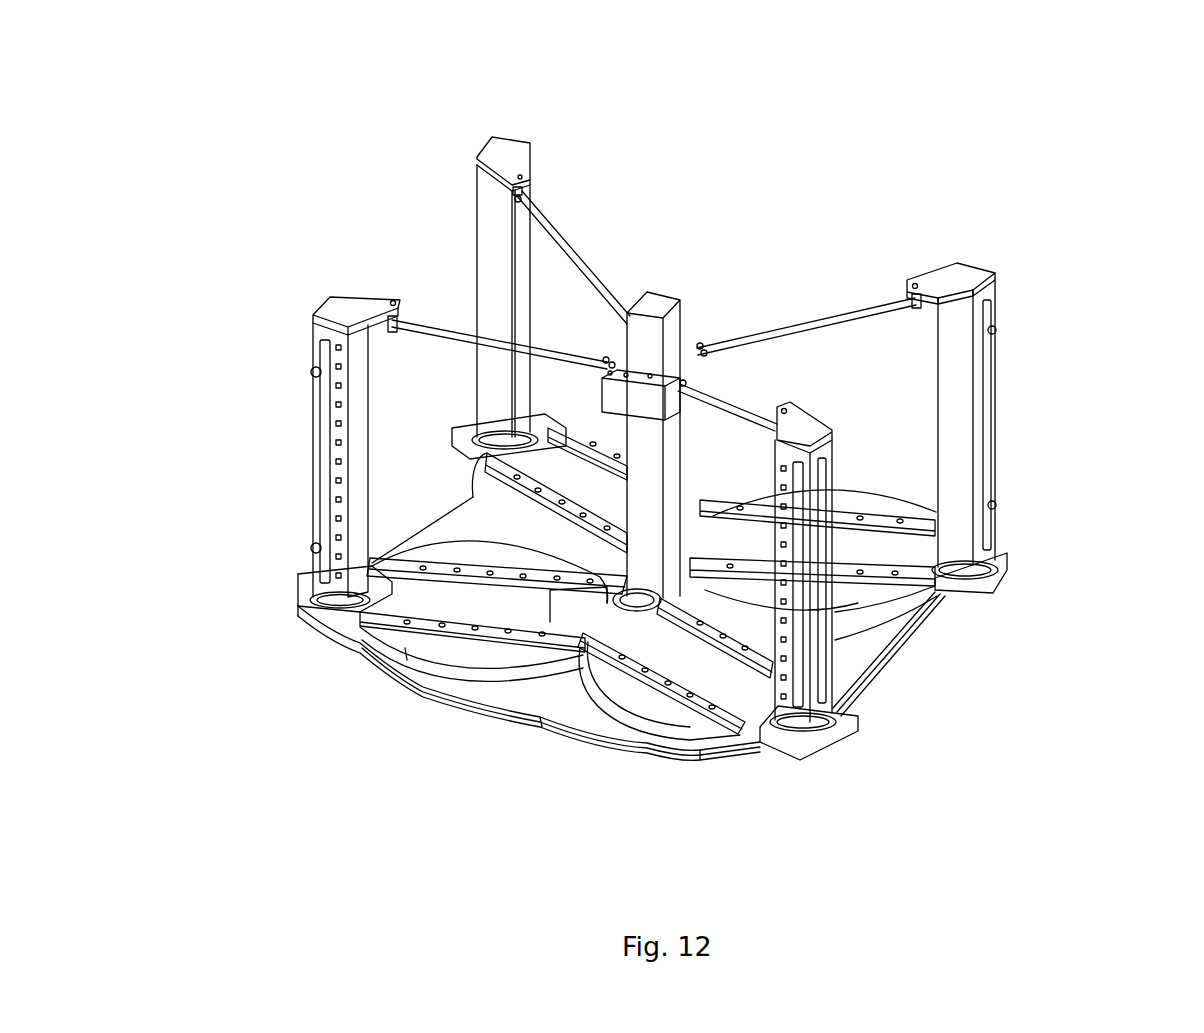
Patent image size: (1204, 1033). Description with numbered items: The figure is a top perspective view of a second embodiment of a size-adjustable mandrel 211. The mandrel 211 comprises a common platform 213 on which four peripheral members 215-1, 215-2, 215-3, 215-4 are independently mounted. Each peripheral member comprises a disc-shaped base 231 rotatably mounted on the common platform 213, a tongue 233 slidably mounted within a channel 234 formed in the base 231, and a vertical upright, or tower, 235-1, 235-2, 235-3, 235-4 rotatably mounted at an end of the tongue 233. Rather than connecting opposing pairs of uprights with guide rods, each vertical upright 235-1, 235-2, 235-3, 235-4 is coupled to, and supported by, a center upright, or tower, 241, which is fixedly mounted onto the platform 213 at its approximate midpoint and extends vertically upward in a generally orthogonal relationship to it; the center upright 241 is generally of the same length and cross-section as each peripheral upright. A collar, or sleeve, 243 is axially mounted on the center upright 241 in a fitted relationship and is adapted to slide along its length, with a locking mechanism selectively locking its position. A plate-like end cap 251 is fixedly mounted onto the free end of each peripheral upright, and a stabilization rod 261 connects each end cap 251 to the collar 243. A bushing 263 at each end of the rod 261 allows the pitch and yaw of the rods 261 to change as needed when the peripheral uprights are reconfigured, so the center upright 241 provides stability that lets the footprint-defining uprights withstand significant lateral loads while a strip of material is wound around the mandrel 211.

The mandrel 211 is at (291, 808).
The common platform 213 is at (567, 710).
The peripheral member 215-1 is at (275, 436).
The peripheral member 215-2 is at (491, 258).
The peripheral member 215-3 is at (1045, 428).
The peripheral member 215-4 is at (809, 617).
The disc-shaped base 231 is at (386, 658).
The tongue 233 is at (421, 592).
The channel 234 is at (552, 620).
The vertical upright 235-1 is at (310, 448).
The vertical upright 235-2 is at (482, 200).
The vertical upright 235-3 is at (995, 443).
The vertical upright 235-4 is at (830, 660).
The center upright 241 is at (655, 297).
The collar 243 is at (622, 386).
The end cap 251 is at (503, 147).
The stabilization rod 261 is at (583, 260).
The bushing 263 is at (392, 324).